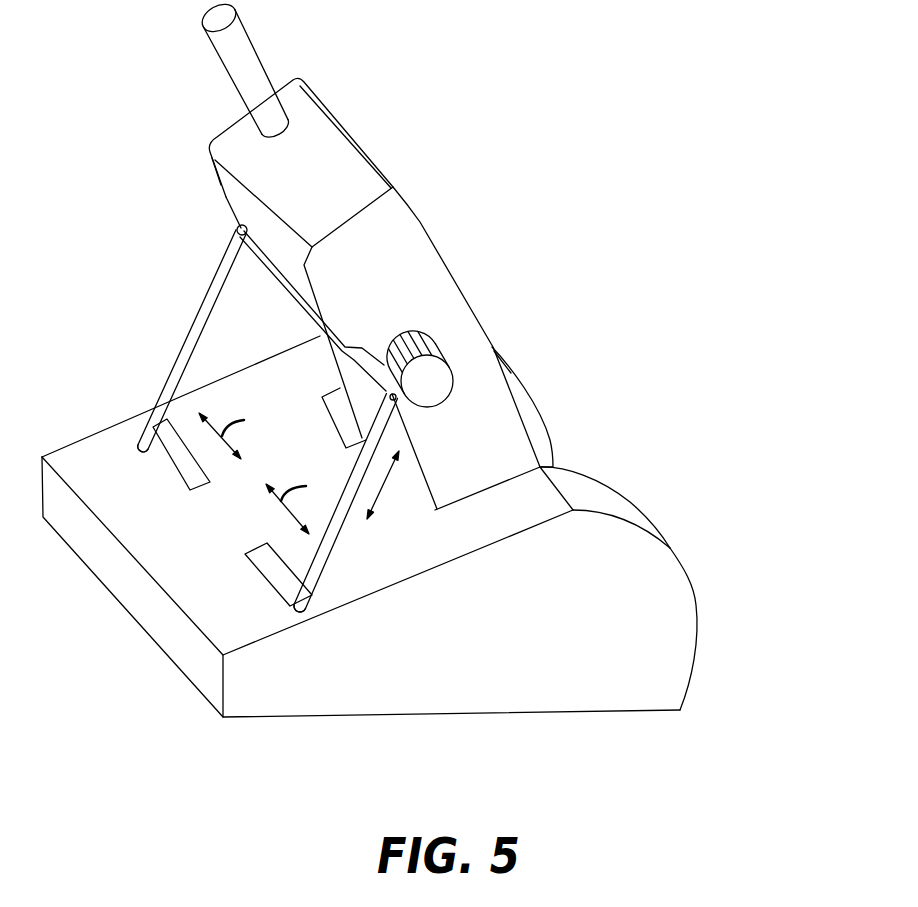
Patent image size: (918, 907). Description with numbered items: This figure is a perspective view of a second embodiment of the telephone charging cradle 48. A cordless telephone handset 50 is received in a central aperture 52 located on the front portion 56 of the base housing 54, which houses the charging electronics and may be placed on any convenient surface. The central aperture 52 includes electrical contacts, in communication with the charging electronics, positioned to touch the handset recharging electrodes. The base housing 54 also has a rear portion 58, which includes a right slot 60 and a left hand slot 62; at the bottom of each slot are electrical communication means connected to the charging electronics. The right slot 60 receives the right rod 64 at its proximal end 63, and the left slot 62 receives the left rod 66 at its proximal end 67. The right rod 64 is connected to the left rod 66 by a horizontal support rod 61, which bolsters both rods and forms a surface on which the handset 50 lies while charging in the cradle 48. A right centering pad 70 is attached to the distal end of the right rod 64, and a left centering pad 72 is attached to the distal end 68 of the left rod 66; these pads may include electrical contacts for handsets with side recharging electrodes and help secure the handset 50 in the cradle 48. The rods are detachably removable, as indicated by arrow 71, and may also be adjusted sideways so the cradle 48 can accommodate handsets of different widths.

The charging cradle 48 is at (502, 98).
The cordless telephone handset 50 is at (427, 252).
The central aperture 52 is at (537, 437).
The base housing 54 is at (673, 586).
The front portion 56 is at (605, 491).
The rear portion 58 is at (208, 627).
The right slot 60 is at (265, 562).
The horizontal support rod 61 is at (367, 357).
The left hand slot 62 is at (183, 470).
The proximal end 63 is at (312, 600).
The right rod 64 is at (324, 546).
The left rod 66 is at (192, 337).
The proximal end 67 is at (138, 430).
The distal end 68 is at (237, 216).
The right centering pad 70 is at (428, 381).
The arrow 71 is at (379, 499).
The left centering pad 72 is at (215, 181).